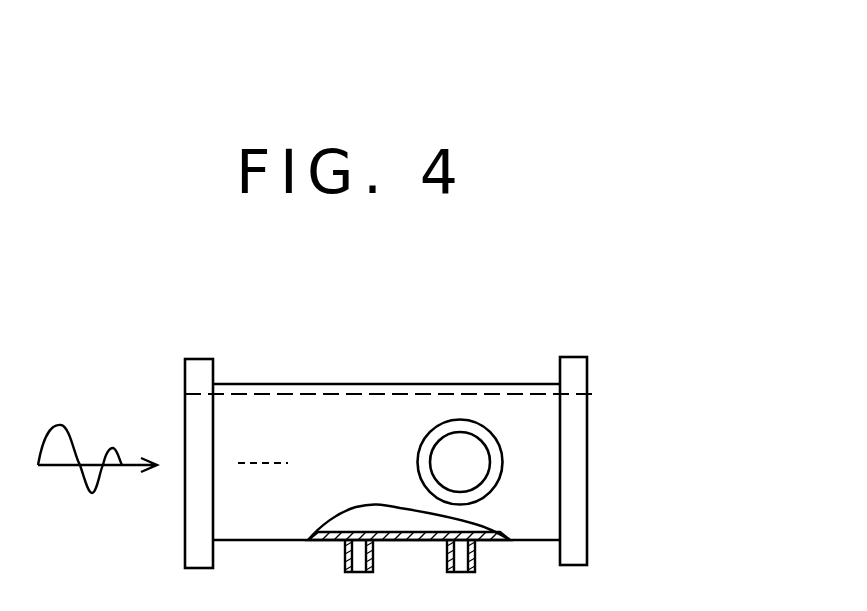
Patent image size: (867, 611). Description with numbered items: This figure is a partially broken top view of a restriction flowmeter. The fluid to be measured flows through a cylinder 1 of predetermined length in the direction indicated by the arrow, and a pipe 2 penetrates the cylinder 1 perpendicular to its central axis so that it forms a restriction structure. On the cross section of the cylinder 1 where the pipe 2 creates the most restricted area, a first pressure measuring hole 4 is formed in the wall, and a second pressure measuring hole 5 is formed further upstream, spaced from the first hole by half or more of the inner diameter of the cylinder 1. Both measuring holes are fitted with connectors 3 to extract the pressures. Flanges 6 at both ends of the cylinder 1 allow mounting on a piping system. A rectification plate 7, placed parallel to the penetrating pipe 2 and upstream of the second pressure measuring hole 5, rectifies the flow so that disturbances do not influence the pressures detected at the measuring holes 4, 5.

The cylinder 1 is at (493, 397).
The pipe 2 is at (442, 421).
The connector 3 is at (445, 555).
The first pressure measuring hole 4 is at (478, 556).
The second pressure measuring hole 5 is at (343, 556).
The flange 6 is at (196, 372).
The rectification plate 7 is at (268, 463).